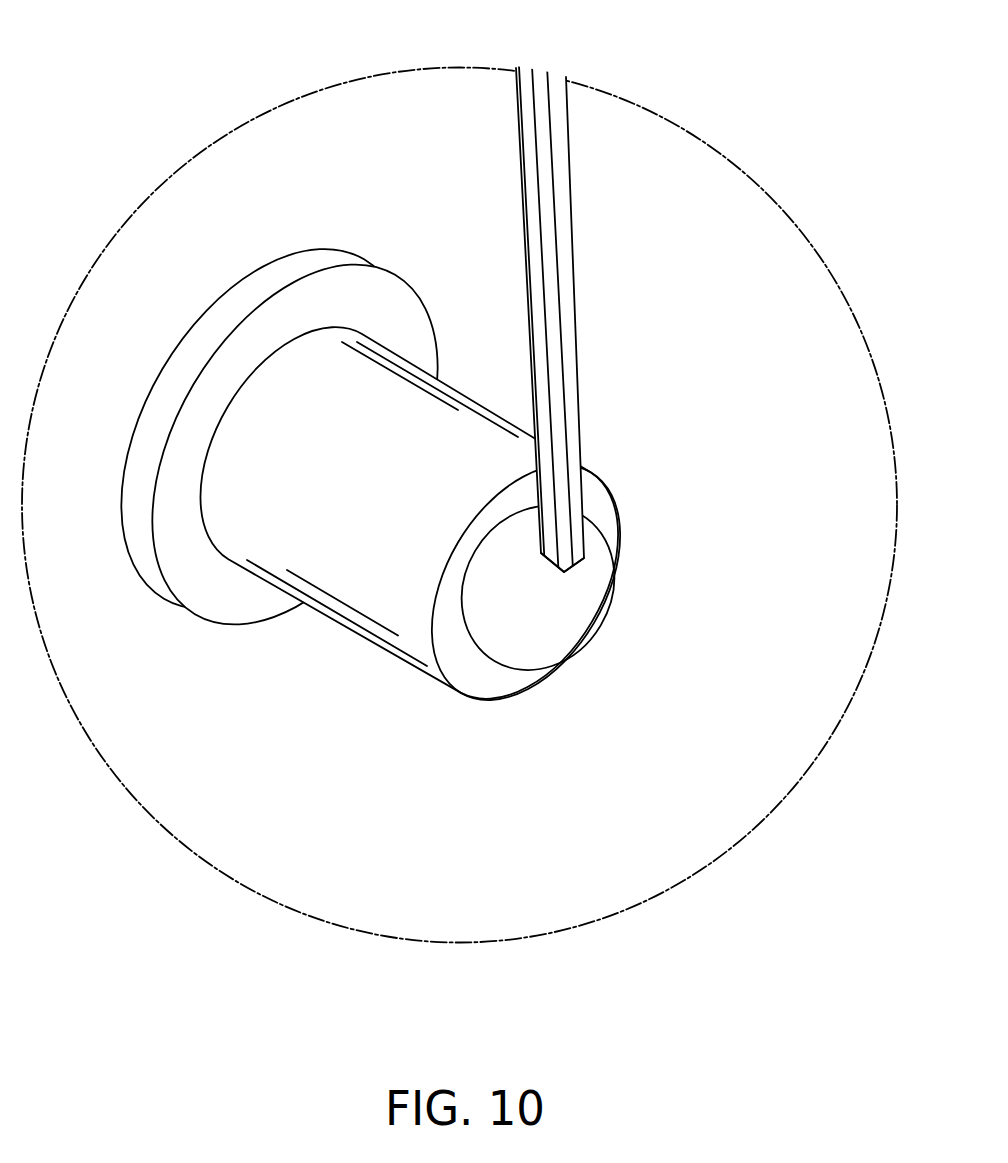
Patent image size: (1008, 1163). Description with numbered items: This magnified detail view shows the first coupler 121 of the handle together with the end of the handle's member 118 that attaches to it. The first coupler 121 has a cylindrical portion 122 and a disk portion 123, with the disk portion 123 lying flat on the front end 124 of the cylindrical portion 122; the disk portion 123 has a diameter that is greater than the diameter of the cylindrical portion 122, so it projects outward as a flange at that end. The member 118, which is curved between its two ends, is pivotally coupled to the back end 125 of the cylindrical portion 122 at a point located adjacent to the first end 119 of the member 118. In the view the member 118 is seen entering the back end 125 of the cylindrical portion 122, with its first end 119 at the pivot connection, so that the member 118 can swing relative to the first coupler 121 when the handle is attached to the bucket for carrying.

The member 118 is at (576, 288).
The first end 119 is at (584, 539).
The first coupler 121 is at (402, 673).
The cylindrical portion 122 is at (310, 557).
The disk portion 123 is at (148, 408).
The front end 124 is at (285, 348).
The back end 125 is at (499, 681).